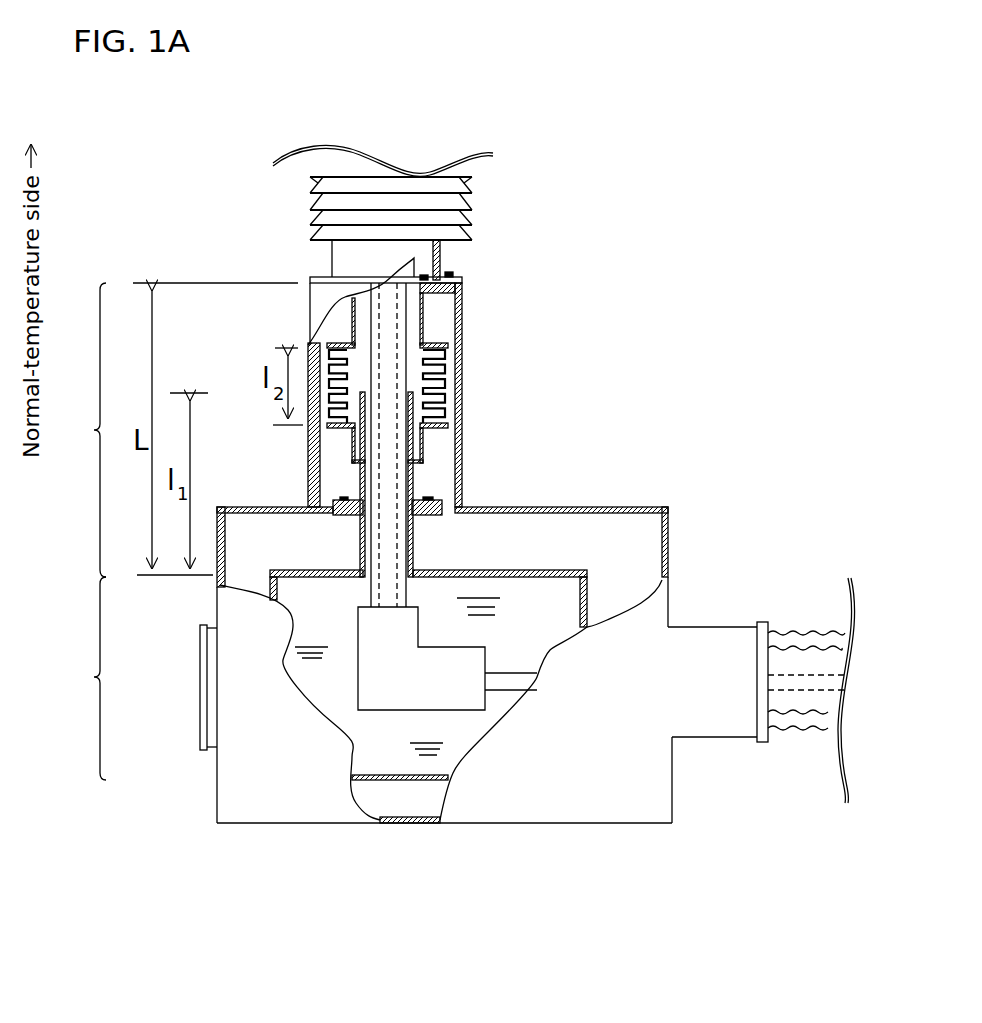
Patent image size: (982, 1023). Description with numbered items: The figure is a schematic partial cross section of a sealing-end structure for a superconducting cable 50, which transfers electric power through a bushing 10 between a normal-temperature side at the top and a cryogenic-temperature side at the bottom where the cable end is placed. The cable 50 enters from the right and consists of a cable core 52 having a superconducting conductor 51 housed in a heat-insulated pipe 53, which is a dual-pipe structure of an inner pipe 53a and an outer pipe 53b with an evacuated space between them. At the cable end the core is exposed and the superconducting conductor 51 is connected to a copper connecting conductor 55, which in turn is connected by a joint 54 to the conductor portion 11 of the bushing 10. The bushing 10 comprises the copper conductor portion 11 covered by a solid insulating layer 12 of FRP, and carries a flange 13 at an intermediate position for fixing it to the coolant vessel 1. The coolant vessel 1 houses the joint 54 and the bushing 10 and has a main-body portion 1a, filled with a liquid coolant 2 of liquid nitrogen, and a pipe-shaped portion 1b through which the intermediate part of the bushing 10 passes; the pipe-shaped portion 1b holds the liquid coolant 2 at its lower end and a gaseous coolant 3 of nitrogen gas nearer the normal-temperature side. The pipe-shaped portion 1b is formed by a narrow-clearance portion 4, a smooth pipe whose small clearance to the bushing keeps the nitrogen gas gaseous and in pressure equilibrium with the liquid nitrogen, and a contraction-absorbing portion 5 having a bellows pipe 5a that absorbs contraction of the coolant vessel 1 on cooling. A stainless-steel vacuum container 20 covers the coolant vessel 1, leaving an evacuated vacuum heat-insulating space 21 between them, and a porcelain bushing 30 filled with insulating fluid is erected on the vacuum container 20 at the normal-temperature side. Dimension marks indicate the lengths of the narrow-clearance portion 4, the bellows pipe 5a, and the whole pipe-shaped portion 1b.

The coolant vessel 1 is at (635, 492).
The main-body portion 1a is at (79, 678).
The pipe-shaped portion 1b is at (79, 430).
The liquid coolant 2 is at (400, 815).
The gaseous coolant 3 is at (409, 373).
The narrow-clearance portion 4 is at (496, 472).
The contraction-absorbing portion 5 is at (428, 376).
The bellows pipe 5a is at (522, 396).
The bushing 10 is at (479, 445).
The conductor portion 11 is at (460, 445).
The solid insulating layer 12 is at (535, 440).
The flange 13 is at (458, 254).
The vacuum container 20 is at (460, 517).
The vacuum heat-insulating space 21 is at (690, 565).
The porcelain bushing 30 is at (431, 203).
The superconducting cable 50 is at (773, 697).
The superconducting conductor 51 is at (825, 708).
The cable core 52 is at (806, 611).
The heat-insulated pipe 53 is at (768, 742).
The inner pipe 53a is at (730, 709).
The outer pipe 53b is at (793, 726).
The joint 54 is at (439, 739).
The connecting conductor 55 is at (542, 772).